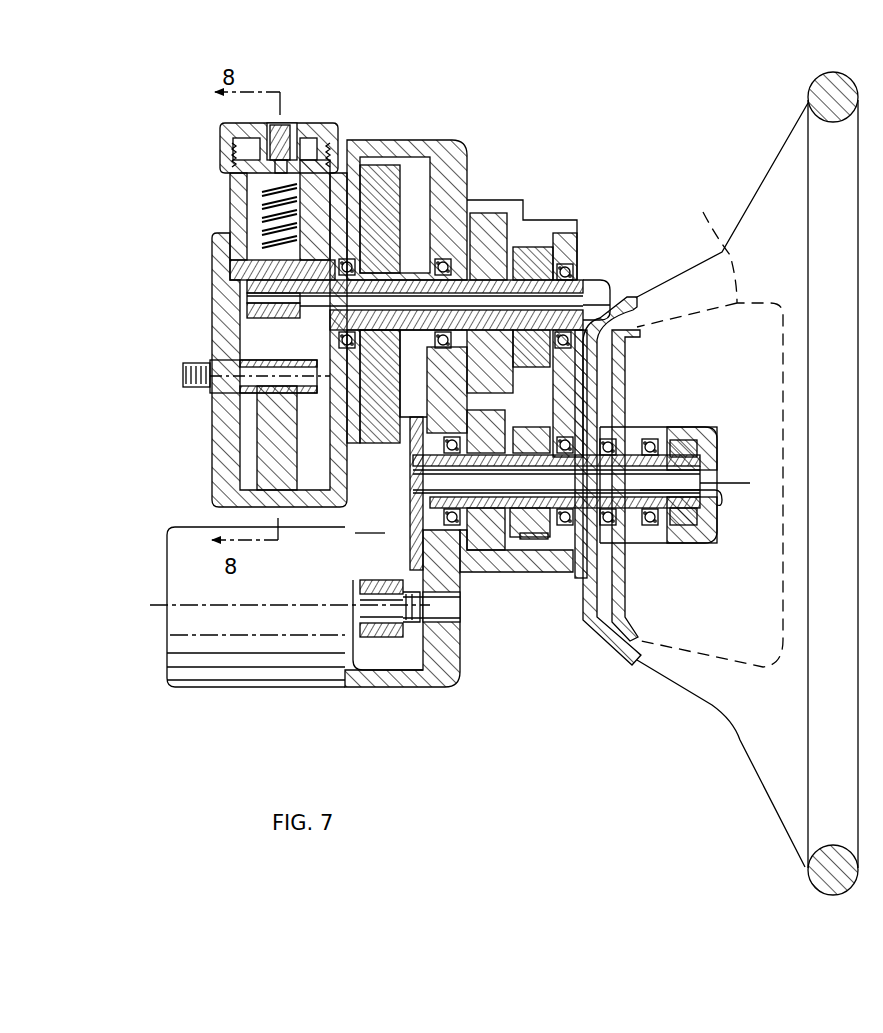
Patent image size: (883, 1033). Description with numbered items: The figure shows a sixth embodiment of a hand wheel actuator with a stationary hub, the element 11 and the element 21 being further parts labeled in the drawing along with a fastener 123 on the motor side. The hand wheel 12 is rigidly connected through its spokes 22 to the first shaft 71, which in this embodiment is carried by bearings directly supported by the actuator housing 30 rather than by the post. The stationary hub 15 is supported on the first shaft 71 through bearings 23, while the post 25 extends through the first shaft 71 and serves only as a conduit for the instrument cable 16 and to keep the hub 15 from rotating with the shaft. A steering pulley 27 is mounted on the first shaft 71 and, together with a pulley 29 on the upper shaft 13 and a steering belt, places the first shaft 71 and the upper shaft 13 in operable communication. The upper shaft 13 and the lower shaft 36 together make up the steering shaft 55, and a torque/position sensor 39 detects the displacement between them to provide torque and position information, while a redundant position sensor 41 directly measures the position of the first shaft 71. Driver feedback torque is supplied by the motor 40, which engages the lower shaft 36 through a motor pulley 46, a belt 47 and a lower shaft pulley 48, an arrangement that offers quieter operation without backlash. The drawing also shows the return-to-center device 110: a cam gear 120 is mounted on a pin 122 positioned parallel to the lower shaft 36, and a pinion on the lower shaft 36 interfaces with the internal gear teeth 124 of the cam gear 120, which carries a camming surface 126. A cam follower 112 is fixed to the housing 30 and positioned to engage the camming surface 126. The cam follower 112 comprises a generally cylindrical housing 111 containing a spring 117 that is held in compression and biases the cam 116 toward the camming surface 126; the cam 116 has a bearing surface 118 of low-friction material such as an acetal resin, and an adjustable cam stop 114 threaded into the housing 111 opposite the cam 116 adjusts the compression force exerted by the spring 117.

The hub 11 is at (717, 437).
The hand wheel 12 is at (808, 190).
The upper shaft 13 is at (577, 288).
The stationary hub 15 is at (710, 425).
The instrument cable 16 is at (745, 483).
The bearing support plate 21 is at (465, 573).
The spokes 22 is at (600, 650).
The bearings 23 is at (655, 437).
The post 25 is at (670, 510).
The steering pulley 27 is at (487, 548).
The pulley 29 is at (560, 237).
The actuator housing 30 is at (450, 678).
The lower shaft 36 is at (383, 280).
The torque/position sensor 39 is at (503, 258).
The motor 40 is at (210, 688).
The redundant position sensor 41 is at (483, 552).
The motor pulley 46 is at (350, 633).
The belt 47 is at (355, 533).
The lower shaft pulley 48 is at (388, 187).
The steering shaft 55 is at (527, 272).
The first shaft 71 is at (630, 513).
The return-to-center device 110 is at (342, 106).
The housing 111 is at (230, 205).
The cam follower 112 is at (218, 122).
The adjustable cam stop 114 is at (220, 158).
The cam 116 is at (233, 225).
The spring 117 is at (257, 195).
The bearing surface 118 is at (243, 268).
The cam gear 120 is at (255, 470).
The pin 122 is at (255, 415).
The bolt 123 is at (240, 365).
The internal gear teeth 124 is at (250, 317).
The camming surface 126 is at (247, 300).